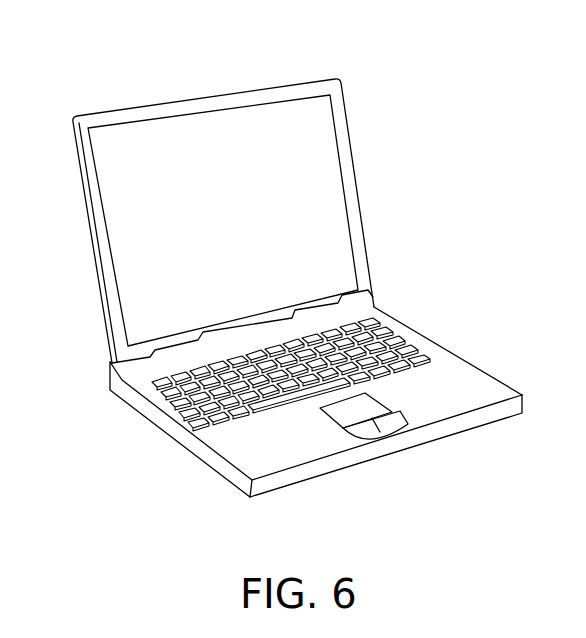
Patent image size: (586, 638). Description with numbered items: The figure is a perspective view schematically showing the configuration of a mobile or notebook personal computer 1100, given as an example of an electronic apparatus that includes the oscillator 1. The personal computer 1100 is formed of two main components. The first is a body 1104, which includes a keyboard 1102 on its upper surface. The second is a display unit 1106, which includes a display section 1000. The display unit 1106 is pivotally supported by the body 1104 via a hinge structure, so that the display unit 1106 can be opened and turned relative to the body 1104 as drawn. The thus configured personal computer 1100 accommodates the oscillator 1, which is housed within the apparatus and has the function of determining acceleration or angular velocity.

The personal computer 1100 is at (406, 68).
The display section 1000 is at (218, 127).
The display unit 1106 is at (357, 170).
The keyboard 1102 is at (402, 338).
The body 1104 is at (305, 455).
The oscillator 1 is at (472, 378).